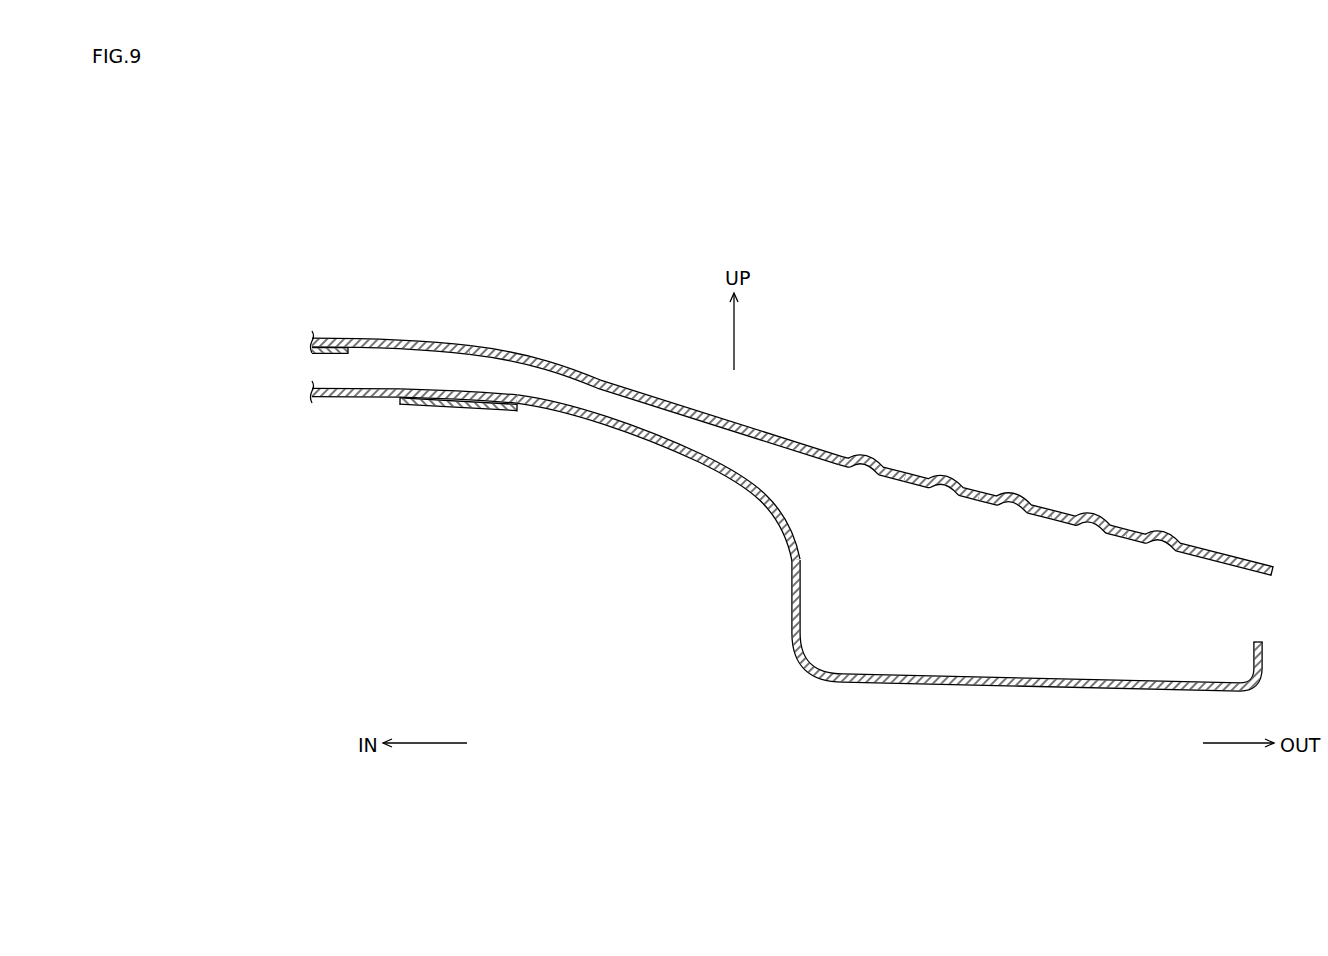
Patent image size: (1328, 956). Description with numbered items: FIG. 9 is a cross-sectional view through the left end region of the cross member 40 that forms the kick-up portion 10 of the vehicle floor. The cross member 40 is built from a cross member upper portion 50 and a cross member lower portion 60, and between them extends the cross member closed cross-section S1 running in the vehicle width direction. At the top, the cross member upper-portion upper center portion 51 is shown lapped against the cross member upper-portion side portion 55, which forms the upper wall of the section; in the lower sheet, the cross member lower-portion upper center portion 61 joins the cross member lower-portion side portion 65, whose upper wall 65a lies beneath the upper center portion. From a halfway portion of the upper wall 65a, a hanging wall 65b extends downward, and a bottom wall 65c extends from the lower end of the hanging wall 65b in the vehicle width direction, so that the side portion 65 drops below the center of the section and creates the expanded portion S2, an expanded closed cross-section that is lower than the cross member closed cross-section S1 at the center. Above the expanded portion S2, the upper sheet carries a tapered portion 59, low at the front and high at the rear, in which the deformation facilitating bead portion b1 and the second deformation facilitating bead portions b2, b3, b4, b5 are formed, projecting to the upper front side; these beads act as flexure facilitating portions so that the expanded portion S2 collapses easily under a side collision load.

The kick-up portion 10 is at (1056, 441).
The cross member 40 is at (888, 410).
The cross member upper portion 50 is at (526, 352).
The cross member upper-portion upper center portion 51 is at (328, 353).
The cross member upper-portion side portion 55 is at (410, 334).
The tapered portion 59 is at (983, 500).
The cross member lower portion 60 is at (458, 388).
The cross member lower-portion upper center portion 61 is at (340, 398).
The cross member lower-portion side portion 65 is at (620, 421).
The upper wall 65a is at (468, 409).
The hanging wall 65b is at (790, 580).
The bottom wall 65c is at (990, 682).
The deformation facilitating bead portion b1 is at (858, 455).
The second deformation facilitating bead portion b2 is at (938, 480).
The second deformation facilitating bead portion b3 is at (1010, 503).
The second deformation facilitating bead portion b4 is at (1088, 522).
The second deformation facilitating bead portion b5 is at (1163, 543).
The cross member closed cross-section S1 is at (553, 394).
The expanded portion S2 is at (985, 612).